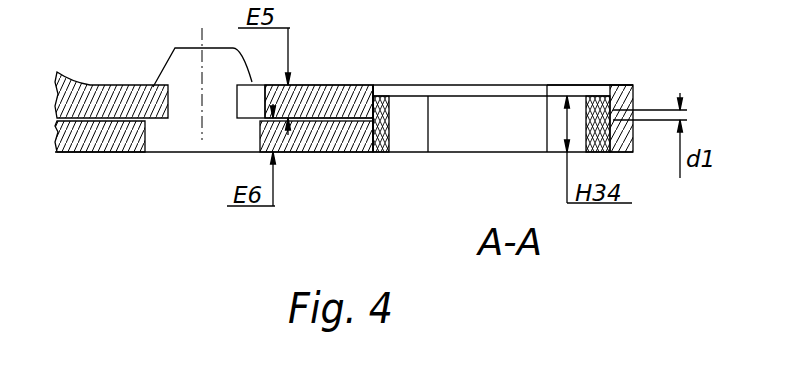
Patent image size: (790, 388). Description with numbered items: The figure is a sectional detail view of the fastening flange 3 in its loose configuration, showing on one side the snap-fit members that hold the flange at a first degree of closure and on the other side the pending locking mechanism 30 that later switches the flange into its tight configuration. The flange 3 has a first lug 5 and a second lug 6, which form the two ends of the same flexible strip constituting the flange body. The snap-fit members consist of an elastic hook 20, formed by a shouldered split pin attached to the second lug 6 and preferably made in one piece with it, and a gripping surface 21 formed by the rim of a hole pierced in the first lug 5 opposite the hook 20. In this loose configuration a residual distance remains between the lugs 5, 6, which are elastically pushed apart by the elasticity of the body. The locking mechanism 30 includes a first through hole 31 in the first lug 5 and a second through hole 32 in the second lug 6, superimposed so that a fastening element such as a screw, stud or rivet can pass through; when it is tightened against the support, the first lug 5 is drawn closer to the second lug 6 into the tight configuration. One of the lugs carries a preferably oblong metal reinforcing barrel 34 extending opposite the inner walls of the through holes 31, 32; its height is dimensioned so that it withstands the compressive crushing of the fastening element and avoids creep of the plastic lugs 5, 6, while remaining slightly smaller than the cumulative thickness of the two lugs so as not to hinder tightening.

The fastening flange 3 is at (645, 73).
The first lug 5 is at (316, 96).
The second lug 6 is at (326, 152).
The elastic hook 20 is at (187, 62).
The gripping surface 21 is at (155, 87).
The locking mechanism 30 is at (578, 83).
The first through hole 31 is at (378, 84).
The second through hole 32 is at (374, 135).
The reinforcing barrel 34 is at (383, 120).